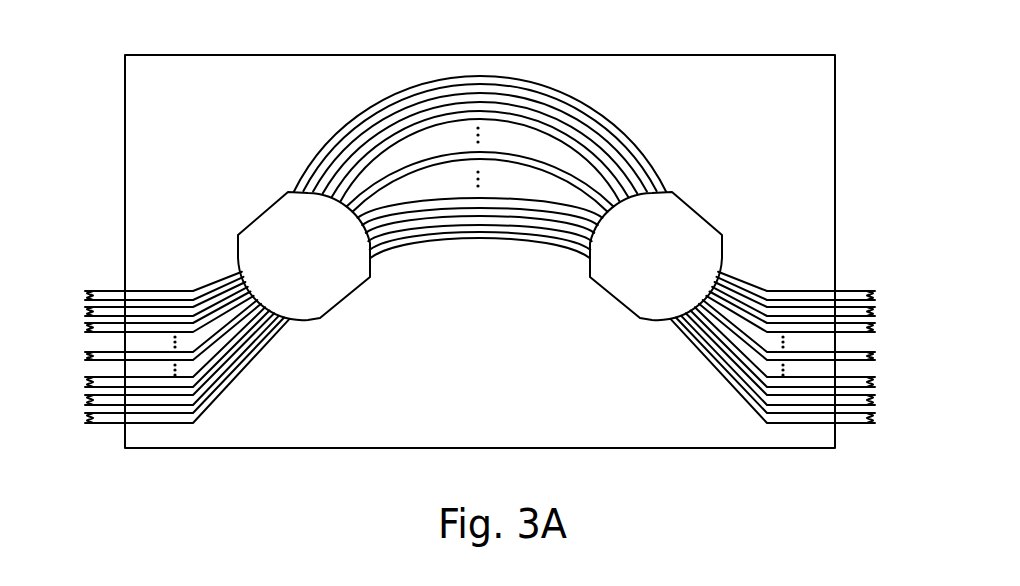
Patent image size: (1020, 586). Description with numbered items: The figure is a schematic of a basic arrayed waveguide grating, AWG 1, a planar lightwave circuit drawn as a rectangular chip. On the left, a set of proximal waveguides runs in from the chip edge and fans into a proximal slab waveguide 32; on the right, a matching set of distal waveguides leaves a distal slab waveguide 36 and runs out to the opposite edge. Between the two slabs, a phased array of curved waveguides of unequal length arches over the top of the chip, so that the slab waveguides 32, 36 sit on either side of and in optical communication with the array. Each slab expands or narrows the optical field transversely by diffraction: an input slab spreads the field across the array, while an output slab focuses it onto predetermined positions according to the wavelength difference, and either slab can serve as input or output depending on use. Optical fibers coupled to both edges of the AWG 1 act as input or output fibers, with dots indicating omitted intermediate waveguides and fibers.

The arrayed waveguide grating (AWG) 1 is at (626, 50).
The proximal slab waveguide 32 is at (263, 232).
The distal slab waveguide 36 is at (680, 207).